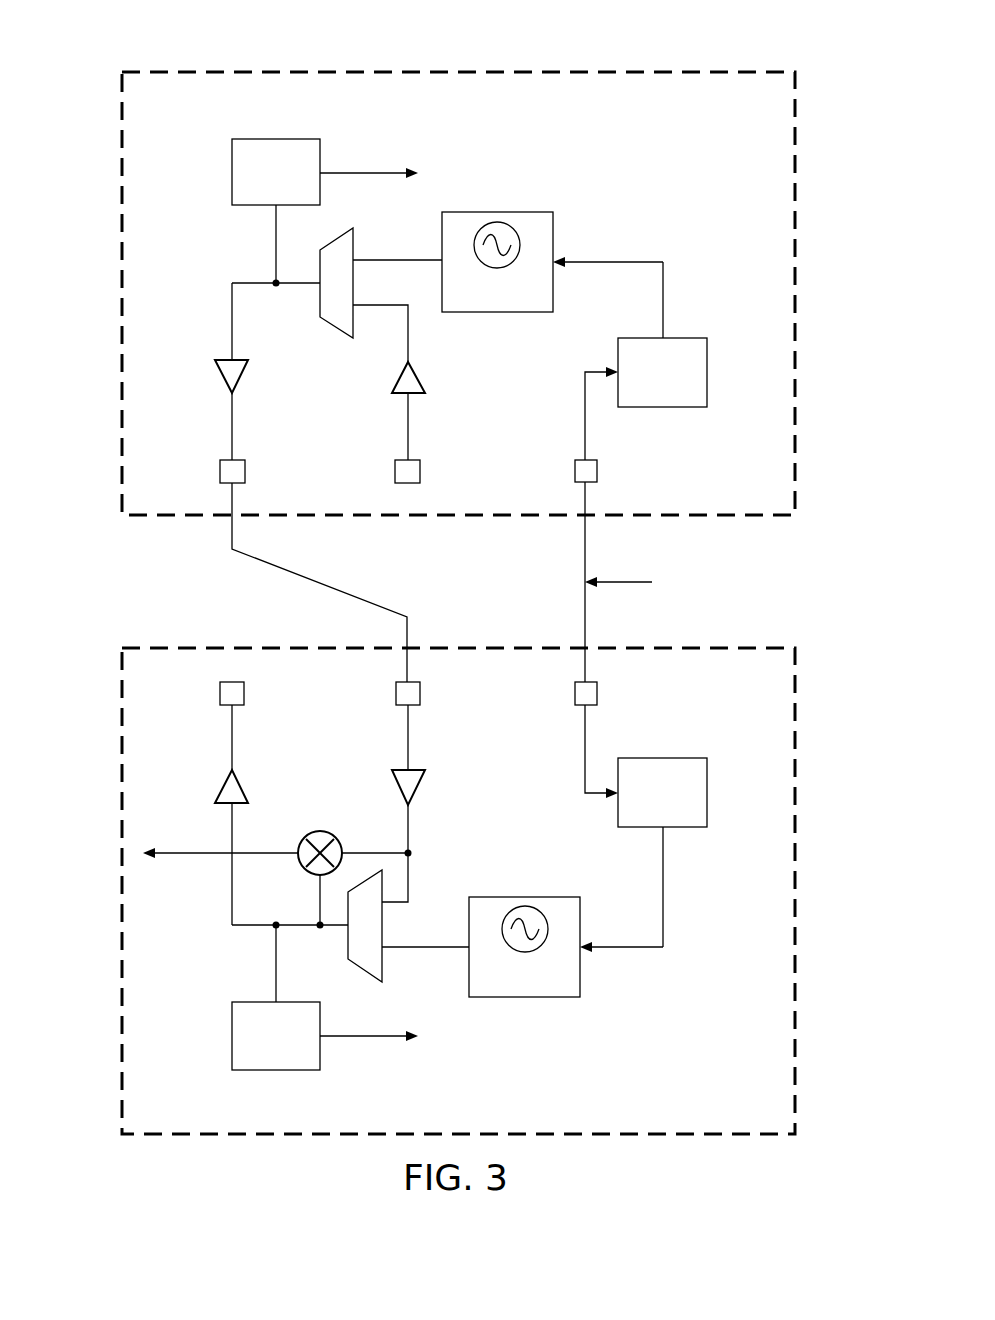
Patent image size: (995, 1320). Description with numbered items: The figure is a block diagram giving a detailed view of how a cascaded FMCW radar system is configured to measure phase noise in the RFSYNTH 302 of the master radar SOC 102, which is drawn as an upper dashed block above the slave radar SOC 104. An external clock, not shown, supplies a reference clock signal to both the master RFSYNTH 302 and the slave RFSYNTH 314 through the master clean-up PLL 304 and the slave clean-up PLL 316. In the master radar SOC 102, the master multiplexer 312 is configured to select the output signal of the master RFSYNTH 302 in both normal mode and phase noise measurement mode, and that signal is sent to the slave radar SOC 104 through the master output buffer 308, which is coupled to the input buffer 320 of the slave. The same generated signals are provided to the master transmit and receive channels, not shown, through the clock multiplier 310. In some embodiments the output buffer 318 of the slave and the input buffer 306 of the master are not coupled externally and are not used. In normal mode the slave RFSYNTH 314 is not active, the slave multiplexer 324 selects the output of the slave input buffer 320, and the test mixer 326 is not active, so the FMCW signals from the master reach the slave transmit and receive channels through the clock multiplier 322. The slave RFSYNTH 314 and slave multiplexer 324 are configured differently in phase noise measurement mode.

The master radar SOC 102 is at (582, 64).
The slave radar SOC 104 is at (582, 1146).
The master RFSYNTH 302 is at (497, 212).
The master clean-up PLL 304 is at (708, 360).
The input buffer 306 is at (426, 380).
The output buffer 308 is at (218, 380).
The clock multiplier 310 is at (262, 139).
The master multiplexer 312 is at (354, 246).
The slave RFSYNTH 314 is at (525, 997).
The slave clean-up PLL 316 is at (708, 805).
The output buffer 318 is at (218, 794).
The input buffer 320 is at (426, 785).
The clock multiplier 322 is at (258, 1071).
The slave multiplexer 324 is at (383, 962).
The test mixer 326 is at (310, 832).